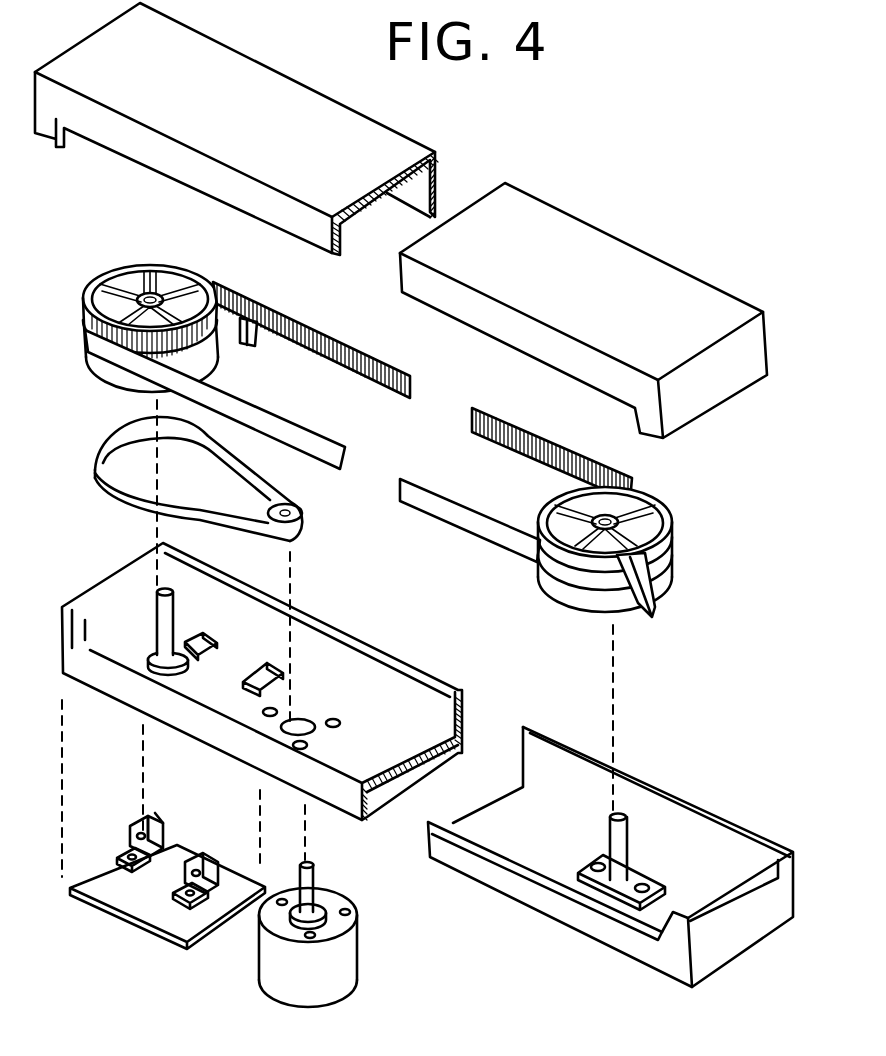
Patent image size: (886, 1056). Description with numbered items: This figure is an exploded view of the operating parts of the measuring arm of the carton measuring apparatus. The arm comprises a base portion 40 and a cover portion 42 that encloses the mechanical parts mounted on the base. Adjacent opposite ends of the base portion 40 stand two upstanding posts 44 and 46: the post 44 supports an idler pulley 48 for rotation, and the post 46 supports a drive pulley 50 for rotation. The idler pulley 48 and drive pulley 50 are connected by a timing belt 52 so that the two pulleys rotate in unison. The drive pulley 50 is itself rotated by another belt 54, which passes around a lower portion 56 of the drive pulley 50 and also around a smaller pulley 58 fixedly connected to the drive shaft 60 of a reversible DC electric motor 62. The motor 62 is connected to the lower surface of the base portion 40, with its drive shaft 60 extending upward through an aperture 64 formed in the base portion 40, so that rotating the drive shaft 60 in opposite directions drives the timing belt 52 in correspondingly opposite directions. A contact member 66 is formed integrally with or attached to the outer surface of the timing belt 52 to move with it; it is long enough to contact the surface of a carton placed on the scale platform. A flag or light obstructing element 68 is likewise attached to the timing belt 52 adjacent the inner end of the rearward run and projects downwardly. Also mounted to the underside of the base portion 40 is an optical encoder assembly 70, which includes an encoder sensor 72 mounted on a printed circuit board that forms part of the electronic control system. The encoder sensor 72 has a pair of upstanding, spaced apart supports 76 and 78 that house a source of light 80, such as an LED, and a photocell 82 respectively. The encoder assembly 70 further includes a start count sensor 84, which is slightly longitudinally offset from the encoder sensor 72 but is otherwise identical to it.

The base portion 40 is at (743, 828).
The cover portion 42 is at (633, 252).
The post 44 is at (627, 823).
The post 46 is at (173, 603).
The idler pulley 48 is at (648, 517).
The drive pulley 50 is at (183, 292).
The timing belt 52 is at (390, 358).
The belt 54 is at (260, 467).
The lower portion 56 is at (130, 377).
The smaller pulley 58 is at (297, 513).
The drive shaft 60 is at (317, 873).
The reversible DC electric motor 62 is at (360, 962).
The aperture 64 is at (313, 737).
The contact member 66 is at (657, 600).
The light obstructing element 68 is at (258, 335).
The optical encoder assembly 70 is at (140, 884).
The encoder sensor 72 is at (120, 870).
The support 76 is at (153, 822).
The support 78 is at (133, 825).
The source of light 80 is at (150, 837).
The photocell 82 is at (135, 840).
The start count sensor 84 is at (177, 907).